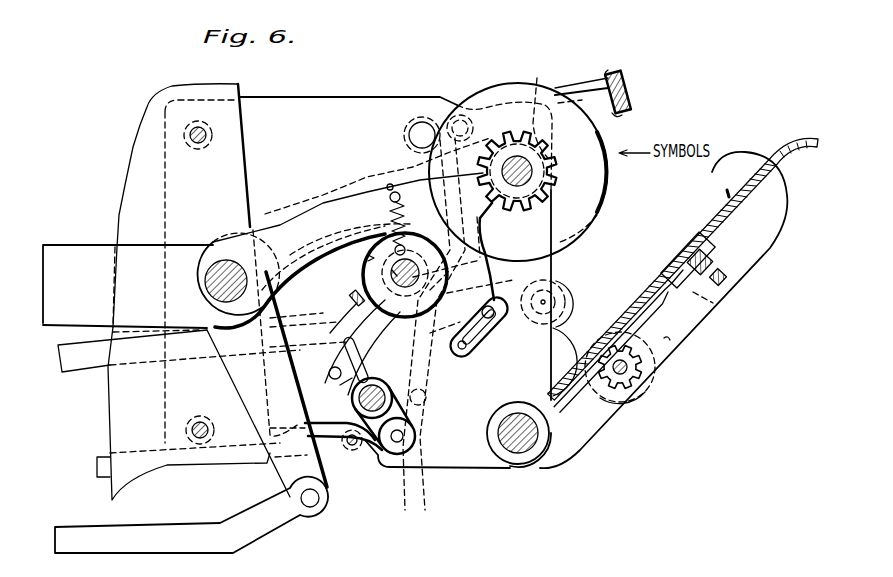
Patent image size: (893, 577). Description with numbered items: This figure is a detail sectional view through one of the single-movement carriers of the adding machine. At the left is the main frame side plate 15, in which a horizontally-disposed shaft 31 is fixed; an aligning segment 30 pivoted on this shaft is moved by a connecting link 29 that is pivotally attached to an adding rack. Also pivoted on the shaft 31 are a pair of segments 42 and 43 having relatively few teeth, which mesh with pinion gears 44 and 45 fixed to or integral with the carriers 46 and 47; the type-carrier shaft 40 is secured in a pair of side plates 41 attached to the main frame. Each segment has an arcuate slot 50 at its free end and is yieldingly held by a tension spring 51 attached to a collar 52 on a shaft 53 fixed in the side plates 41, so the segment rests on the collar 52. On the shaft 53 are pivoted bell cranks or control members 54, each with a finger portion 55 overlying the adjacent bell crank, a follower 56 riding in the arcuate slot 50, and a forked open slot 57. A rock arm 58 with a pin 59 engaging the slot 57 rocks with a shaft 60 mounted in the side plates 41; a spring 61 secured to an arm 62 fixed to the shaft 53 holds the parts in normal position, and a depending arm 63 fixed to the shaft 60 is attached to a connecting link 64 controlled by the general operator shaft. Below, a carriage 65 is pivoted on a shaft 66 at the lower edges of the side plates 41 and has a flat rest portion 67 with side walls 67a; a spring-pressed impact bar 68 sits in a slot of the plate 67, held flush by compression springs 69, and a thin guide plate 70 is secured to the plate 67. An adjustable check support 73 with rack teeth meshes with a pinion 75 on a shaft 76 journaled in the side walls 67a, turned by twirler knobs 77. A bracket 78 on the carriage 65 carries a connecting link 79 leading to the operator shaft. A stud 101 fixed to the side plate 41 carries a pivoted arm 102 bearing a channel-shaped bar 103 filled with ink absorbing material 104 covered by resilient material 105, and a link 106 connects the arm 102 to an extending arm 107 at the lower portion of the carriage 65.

The main frame side plate 15 is at (147, 125).
The connecting link 29 is at (177, 530).
The aligning segment 30 is at (85, 250).
The horizontally-disposed shaft 31 is at (218, 262).
The horizontally-disposed shaft 40 is at (532, 175).
The side plate 41 is at (375, 108).
The segment 42 is at (322, 213).
The segment 43 is at (372, 197).
The pinion gear 44 is at (557, 162).
The pinion gear 45 is at (541, 107).
The carrier 46 is at (586, 220).
The carrier 47 is at (600, 213).
The arcuate slot 50 is at (478, 347).
The tension spring 51 is at (390, 215).
The collar 52 is at (362, 280).
The horizontally-disposed shaft 53 is at (392, 271).
The bell crank 54 is at (330, 329).
The finger portion 55 is at (352, 300).
The follower 56 is at (498, 318).
The open slot 57 is at (332, 358).
The rock arm 58 is at (340, 388).
The pin 59 is at (329, 373).
The horizontally extending shaft 60 is at (358, 406).
The spring 61 is at (487, 256).
The arm 62 is at (373, 258).
The depending arm 63 is at (413, 426).
The connecting link 64 is at (103, 460).
The carriage 65 is at (700, 330).
The horizontally-extending shaft 66 is at (518, 450).
The rest portion 67 is at (778, 163).
The side wall 67a is at (670, 342).
The impact bar 68 is at (718, 250).
The compression spring 69 is at (712, 295).
The guide plate 70 is at (727, 198).
The check support 73 is at (617, 320).
The pinion 75 is at (632, 402).
The shaft 76 is at (628, 368).
The twirler knob 77 is at (642, 394).
The bracket 78 is at (574, 314).
The connecting link 79 is at (86, 362).
The stud 101 is at (423, 133).
The arm 102 is at (486, 112).
The channel-shaped bar 103 is at (626, 80).
The ink absorbing material 104 is at (634, 92).
The resilient material 105 is at (609, 72).
The link 106 is at (470, 360).
The extending arm 107 is at (415, 480).